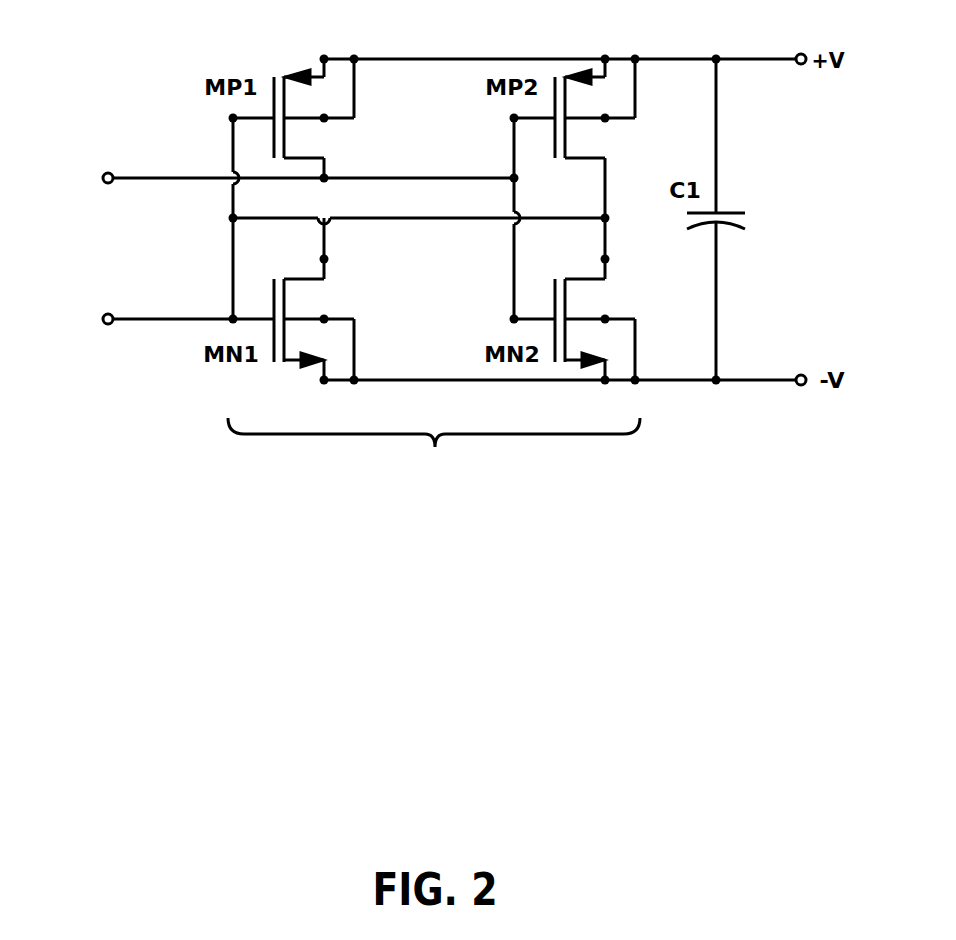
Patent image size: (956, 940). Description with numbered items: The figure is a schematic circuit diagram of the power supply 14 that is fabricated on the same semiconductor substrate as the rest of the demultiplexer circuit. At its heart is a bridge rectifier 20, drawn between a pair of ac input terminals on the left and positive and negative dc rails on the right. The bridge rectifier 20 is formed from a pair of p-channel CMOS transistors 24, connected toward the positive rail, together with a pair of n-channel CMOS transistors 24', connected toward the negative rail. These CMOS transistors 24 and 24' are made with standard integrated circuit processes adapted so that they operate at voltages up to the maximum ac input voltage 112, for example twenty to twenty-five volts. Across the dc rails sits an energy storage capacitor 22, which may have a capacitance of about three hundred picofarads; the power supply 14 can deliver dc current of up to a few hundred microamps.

The power supply 14 is at (679, 465).
The bridge rectifier 20 is at (434, 447).
The energy storage capacitor 22 is at (695, 235).
The p-channel CMOS transistors 24 is at (434, 127).
The n-channel CMOS transistors 24' is at (444, 314).
The ac input voltage 112 is at (307, 248).